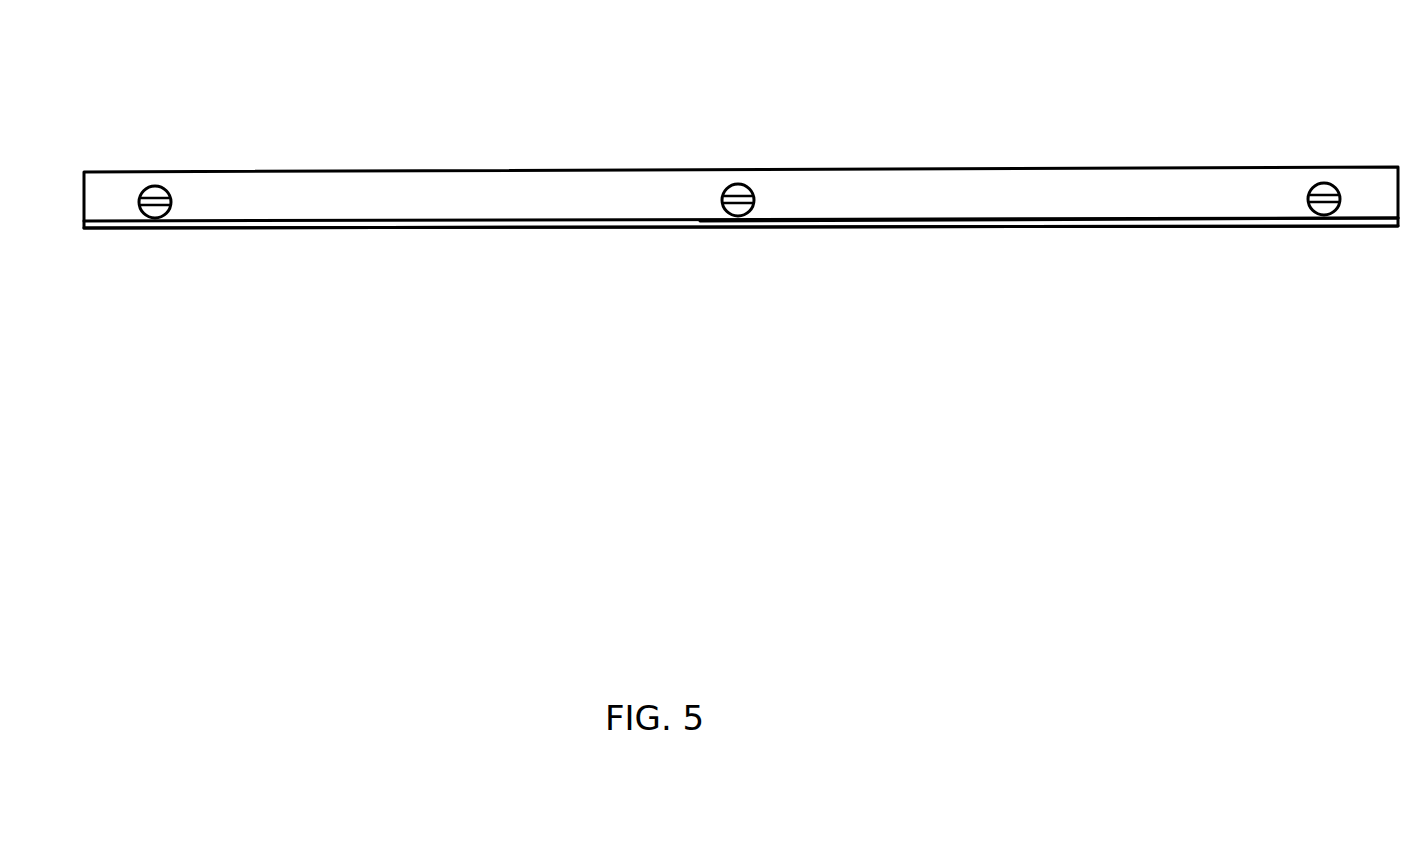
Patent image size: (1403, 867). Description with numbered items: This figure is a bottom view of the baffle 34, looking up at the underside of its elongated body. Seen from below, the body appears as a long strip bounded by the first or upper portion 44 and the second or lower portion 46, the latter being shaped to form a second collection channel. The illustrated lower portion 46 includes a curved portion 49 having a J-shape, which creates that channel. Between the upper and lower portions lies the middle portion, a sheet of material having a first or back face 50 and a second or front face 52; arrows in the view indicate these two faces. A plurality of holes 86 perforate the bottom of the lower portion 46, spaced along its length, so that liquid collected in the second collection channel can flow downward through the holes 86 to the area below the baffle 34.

The baffle 34 is at (326, 445).
The first or upper portion 44 is at (505, 227).
The second or lower portion 46 is at (393, 193).
The curved portion 49 is at (860, 198).
The first face or back face 50 is at (671, 327).
The second face or front face 52 is at (826, 115).
The holes 86 is at (160, 190).